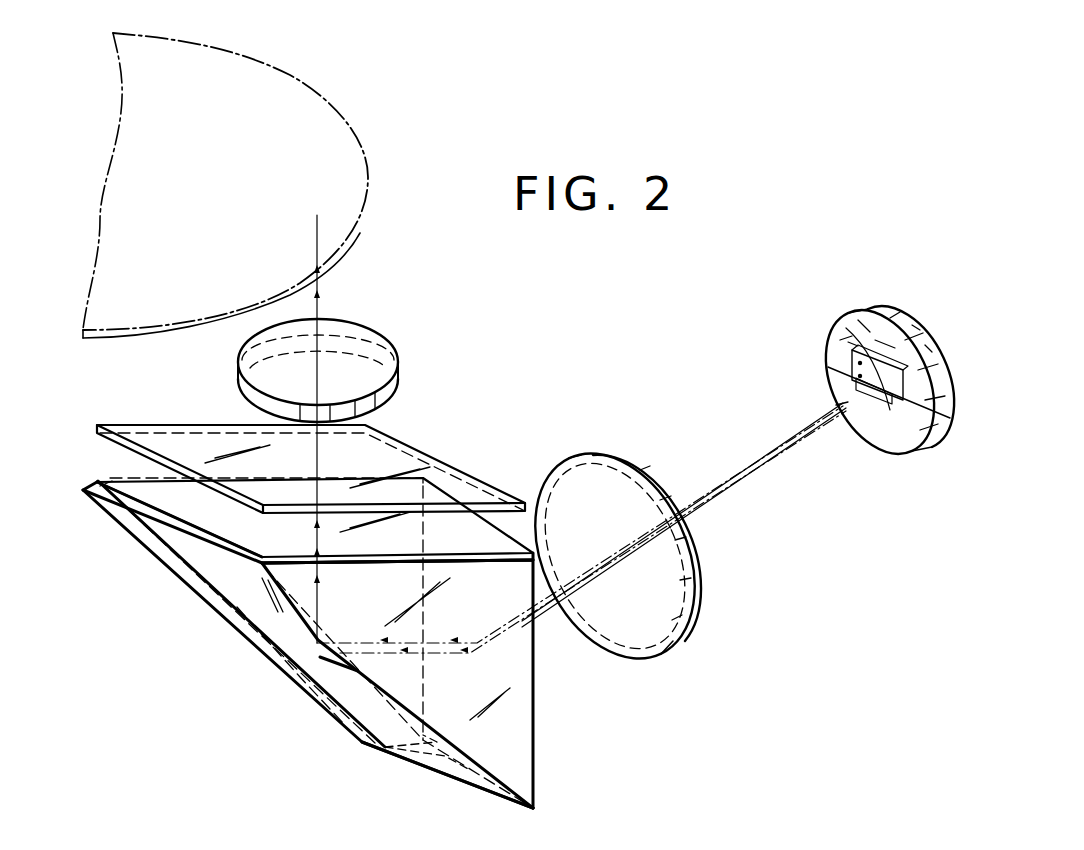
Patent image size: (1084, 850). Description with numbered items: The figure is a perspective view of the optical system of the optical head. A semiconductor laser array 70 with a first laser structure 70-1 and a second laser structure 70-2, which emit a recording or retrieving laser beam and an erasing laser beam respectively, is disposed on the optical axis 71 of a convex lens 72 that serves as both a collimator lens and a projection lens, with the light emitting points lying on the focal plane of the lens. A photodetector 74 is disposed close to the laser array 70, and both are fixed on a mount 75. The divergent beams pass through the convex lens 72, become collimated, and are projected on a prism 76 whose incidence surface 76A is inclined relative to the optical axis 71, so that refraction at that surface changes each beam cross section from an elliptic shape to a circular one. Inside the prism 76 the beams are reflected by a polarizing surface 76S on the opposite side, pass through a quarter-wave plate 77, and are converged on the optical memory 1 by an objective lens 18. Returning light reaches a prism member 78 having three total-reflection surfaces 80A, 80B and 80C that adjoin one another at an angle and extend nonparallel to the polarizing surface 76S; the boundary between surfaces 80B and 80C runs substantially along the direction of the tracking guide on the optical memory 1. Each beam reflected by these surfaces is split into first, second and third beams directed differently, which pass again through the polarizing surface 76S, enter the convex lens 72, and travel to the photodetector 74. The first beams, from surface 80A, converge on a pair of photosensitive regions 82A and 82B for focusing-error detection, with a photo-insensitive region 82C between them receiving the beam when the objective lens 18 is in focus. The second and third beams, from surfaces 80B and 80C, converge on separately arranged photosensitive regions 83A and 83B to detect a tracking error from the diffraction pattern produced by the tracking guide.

The optical memory 1 is at (353, 142).
The objective lens 18 is at (377, 371).
The semiconductor laser array 70 is at (863, 375).
The first laser structure 70-1 is at (843, 387).
The second laser structure 70-2 is at (857, 417).
The optical axis 71 is at (729, 492).
The convex lens 72 is at (658, 644).
The photodetector 74 is at (927, 348).
The mount 75 is at (865, 308).
The prism 76 is at (425, 621).
The incidence surface 76A is at (502, 533).
The polarizing surface 76S is at (113, 478).
The quarter-wave plate 77 is at (169, 435).
The prism member 78 is at (120, 528).
The total-reflection surface 80A is at (204, 600).
The total-reflection surface 80B is at (423, 750).
The total-reflection surface 80C is at (287, 627).
The photosensitive region 82A is at (855, 342).
The photosensitive region 82B is at (917, 327).
The photo-insensitive region 82C is at (885, 342).
The photosensitive region 83A is at (850, 352).
The photosensitive region 83B is at (850, 365).